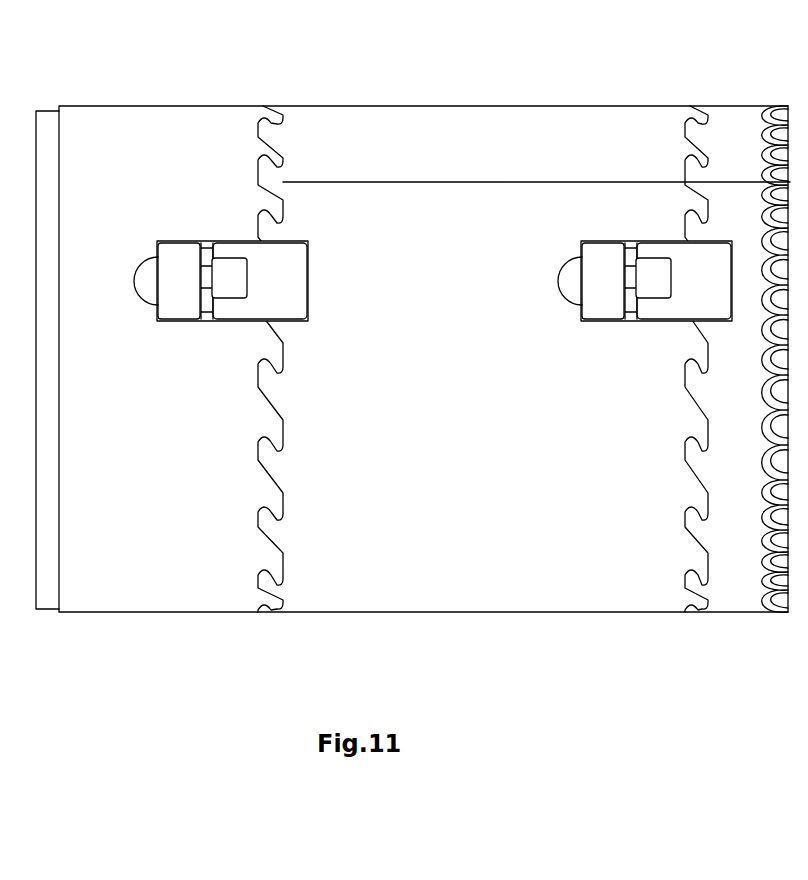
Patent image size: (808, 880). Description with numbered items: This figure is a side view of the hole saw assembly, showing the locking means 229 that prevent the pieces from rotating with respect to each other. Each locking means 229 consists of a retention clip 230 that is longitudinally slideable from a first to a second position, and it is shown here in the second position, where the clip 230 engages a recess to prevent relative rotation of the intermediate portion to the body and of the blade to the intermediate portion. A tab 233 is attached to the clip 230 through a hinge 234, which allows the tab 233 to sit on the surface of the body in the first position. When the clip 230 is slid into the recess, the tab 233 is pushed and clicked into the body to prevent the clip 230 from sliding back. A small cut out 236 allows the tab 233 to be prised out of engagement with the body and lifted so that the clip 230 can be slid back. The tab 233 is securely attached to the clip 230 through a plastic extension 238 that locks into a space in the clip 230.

The locking means 229 is at (411, 216).
The retention clip 230 is at (300, 277).
The tab 233 is at (178, 303).
The hinge 234 is at (207, 302).
The cut out 236 is at (147, 280).
The latch button 238 is at (232, 275).